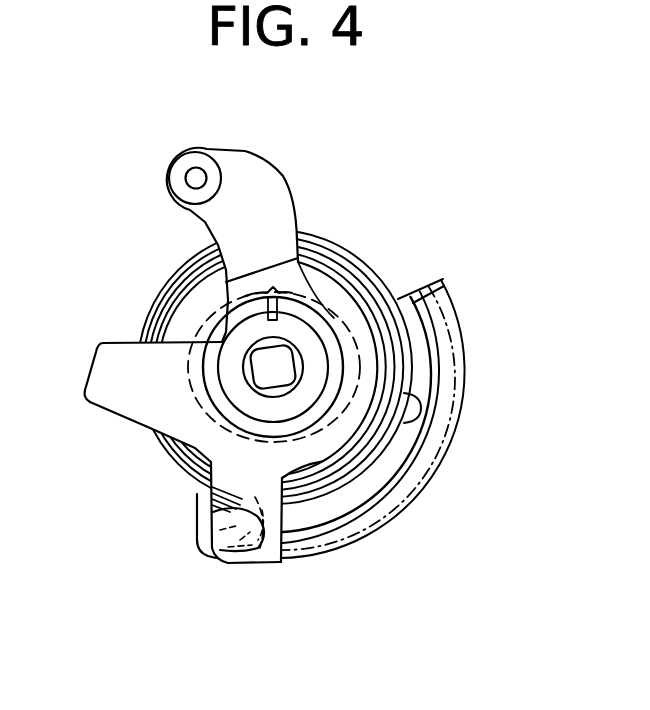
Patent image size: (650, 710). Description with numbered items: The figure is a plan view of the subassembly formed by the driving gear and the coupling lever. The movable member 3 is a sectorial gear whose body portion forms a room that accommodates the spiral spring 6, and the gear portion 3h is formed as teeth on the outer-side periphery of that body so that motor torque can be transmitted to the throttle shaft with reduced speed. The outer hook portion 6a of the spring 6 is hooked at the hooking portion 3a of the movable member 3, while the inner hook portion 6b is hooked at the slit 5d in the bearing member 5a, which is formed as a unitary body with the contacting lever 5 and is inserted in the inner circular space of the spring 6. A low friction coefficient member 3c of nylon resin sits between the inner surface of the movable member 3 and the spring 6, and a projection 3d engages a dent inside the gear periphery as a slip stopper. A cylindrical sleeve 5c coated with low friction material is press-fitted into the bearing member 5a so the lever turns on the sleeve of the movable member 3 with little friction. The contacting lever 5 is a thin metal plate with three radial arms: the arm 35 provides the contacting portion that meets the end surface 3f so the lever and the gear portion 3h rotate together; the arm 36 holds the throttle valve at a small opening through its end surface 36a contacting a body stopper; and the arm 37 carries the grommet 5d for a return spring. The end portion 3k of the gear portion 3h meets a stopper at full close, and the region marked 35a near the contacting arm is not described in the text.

The movable member 3 is at (406, 432).
The hooking portion 3a is at (240, 552).
The low friction coefficient member 3c is at (408, 340).
The projection 3d is at (420, 404).
The end surface 3f is at (255, 547).
The gear portion 3h is at (447, 431).
The end portion 3k is at (196, 527).
The contacting lever 5 is at (233, 164).
The bearing member 5a is at (395, 283).
The cylindrical sleeve 5c is at (317, 392).
The slit 5d is at (182, 178).
The spiral spring 6 is at (341, 252).
The outer hook portion 6a is at (262, 548).
The inner hook portion 6b is at (279, 288).
The arm 35 is at (222, 528).
The stopper end portion 35a is at (290, 558).
The arm 36 is at (108, 374).
The end surface 36a is at (118, 416).
The arm 37 is at (267, 183).